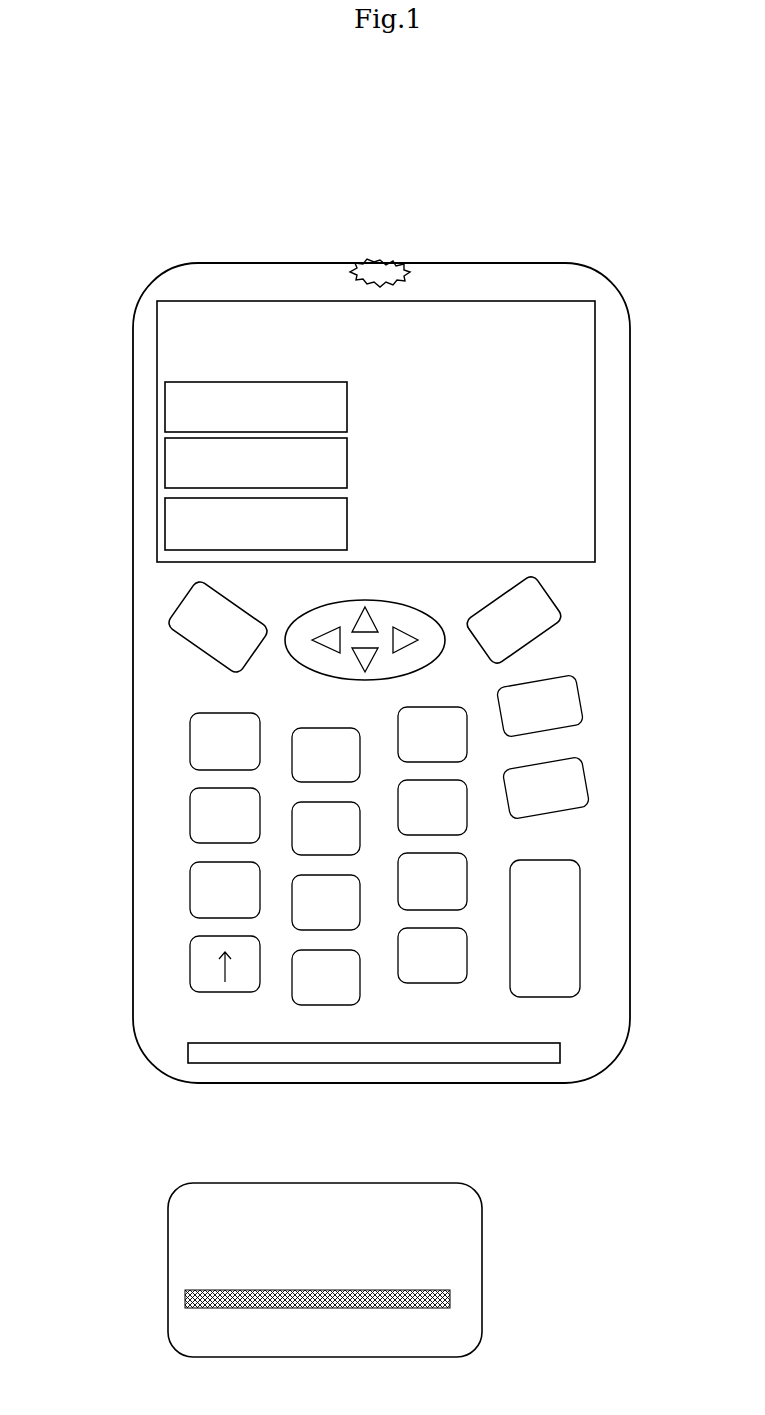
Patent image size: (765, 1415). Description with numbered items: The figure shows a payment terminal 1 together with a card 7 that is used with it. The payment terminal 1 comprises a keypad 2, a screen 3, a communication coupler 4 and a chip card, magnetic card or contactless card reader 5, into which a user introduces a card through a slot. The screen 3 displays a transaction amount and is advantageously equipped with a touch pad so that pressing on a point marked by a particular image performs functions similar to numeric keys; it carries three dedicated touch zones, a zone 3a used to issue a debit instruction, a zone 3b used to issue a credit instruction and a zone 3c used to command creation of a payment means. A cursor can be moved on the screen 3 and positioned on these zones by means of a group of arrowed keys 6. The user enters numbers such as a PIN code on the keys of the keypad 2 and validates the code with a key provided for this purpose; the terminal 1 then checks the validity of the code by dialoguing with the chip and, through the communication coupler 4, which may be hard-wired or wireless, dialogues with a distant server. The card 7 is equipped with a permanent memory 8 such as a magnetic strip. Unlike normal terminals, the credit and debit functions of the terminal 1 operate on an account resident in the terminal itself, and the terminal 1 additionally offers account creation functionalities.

The payment terminal 1 is at (150, 288).
The keypad 2 is at (172, 878).
The screen 3 is at (265, 302).
The touch zone for debit 3a is at (165, 415).
The touch zone for credit 3b is at (165, 470).
The touch zone for account creation 3c is at (165, 528).
The communication coupler 4 is at (402, 261).
The card reader 5 is at (188, 1059).
The group of arrowed keys 6 is at (298, 657).
The card 7 is at (475, 1238).
The permanent memory 8 is at (200, 1290).